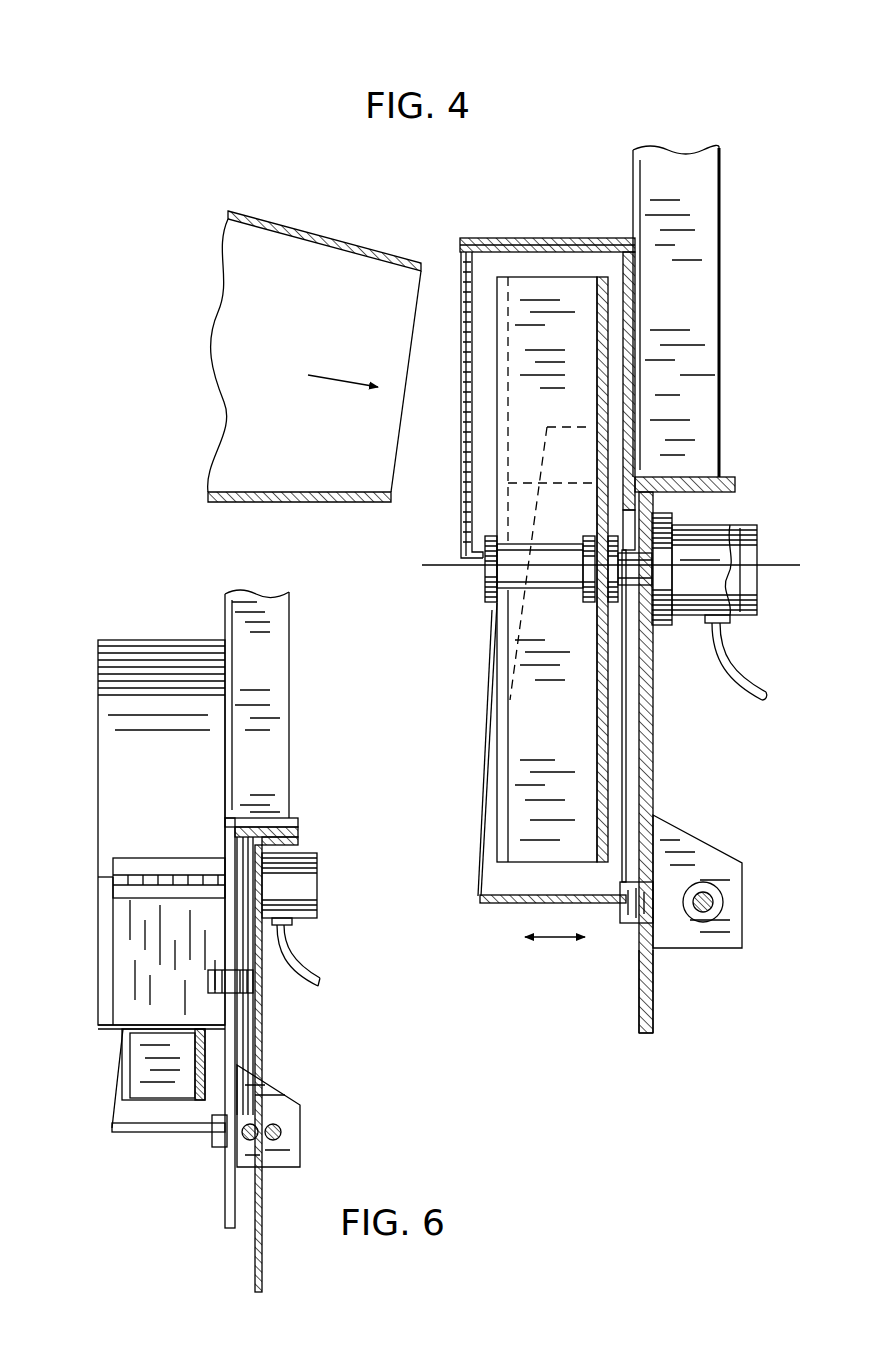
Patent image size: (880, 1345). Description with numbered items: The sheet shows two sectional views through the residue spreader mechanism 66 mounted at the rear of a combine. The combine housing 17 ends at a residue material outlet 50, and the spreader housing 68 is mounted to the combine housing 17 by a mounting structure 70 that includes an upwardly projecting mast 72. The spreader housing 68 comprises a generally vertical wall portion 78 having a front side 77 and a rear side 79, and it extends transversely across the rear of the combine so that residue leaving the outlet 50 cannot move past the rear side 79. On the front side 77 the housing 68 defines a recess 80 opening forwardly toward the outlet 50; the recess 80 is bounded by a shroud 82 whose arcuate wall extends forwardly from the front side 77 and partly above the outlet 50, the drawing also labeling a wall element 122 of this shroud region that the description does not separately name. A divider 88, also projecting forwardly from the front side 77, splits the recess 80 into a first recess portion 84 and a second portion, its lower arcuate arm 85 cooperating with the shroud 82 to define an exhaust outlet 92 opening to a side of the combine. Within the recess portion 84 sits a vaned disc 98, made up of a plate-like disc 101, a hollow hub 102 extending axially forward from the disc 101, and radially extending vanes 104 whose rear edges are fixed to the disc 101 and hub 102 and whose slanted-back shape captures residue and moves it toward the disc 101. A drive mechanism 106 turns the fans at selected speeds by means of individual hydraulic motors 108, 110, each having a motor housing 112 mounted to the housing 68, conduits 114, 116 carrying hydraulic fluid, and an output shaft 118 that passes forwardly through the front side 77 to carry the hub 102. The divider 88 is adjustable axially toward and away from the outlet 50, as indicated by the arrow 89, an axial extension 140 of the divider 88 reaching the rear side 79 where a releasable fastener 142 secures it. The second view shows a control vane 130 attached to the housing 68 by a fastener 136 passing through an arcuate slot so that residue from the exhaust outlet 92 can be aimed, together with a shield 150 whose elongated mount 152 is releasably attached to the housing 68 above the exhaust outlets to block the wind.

In FIG. 4, the housing 17 is at (268, 216).
In FIG. 4, the residue material outlet 50 is at (400, 290).
In FIG. 4, the spreader mechanism 66 is at (626, 132).
In FIG. 6, the spreader mechanism 66 is at (92, 856).
In FIG. 4, the housing 68 is at (662, 786).
In FIG. 6, the housing 68 is at (244, 1210).
In FIG. 4, the mounting structure 70 is at (730, 168).
In FIG. 6, the mounting structure 70 is at (299, 640).
In FIG. 4, the mast 72 is at (695, 232).
In FIG. 6, the mast 72 is at (276, 696).
In FIG. 4, the front side 77 is at (638, 1000).
In FIG. 4, the vertical wall portion 78 is at (655, 1018).
In FIG. 4, the rear side 79 is at (655, 973).
In FIG. 4, the recess 80 is at (558, 270).
In FIG. 4, the shroud 82 is at (508, 238).
In FIG. 6, the shroud 82 is at (118, 755).
In FIG. 4, the first recess portion 84 is at (620, 332).
In FIG. 4, the arcuate arm 85 is at (511, 905).
In FIG. 4, the divider 88 is at (482, 866).
In FIG. 6, the divider 88 is at (114, 1062).
In FIG. 4, the arrow 89 is at (555, 938).
In FIG. 6, the exhaust outlet 92 is at (138, 1114).
In FIG. 4, the vaned disc 98 is at (494, 687).
In FIG. 4, the plate-like disc 101 is at (605, 395).
In FIG. 6, the plate-like disc 101 is at (194, 1090).
In FIG. 4, the hollow hub 102 is at (544, 560).
In FIG. 4, the vane 104 is at (528, 455).
In FIG. 6, the vane 104 is at (148, 1080).
In FIG. 4, the drive mechanism 106 is at (745, 510).
In FIG. 6, the drive mechanism 106 is at (322, 892).
In FIG. 4, the motor 108 is at (700, 597).
In FIG. 4, the motor 110 is at (755, 570).
In FIG. 4, the motor housing 112 is at (713, 547).
In FIG. 4, the conduit 114 is at (734, 667).
In FIG. 4, the conduit 116 is at (746, 700).
In FIG. 4, the output shaft 118 is at (484, 580).
In FIG. 4, the housing wall 122 is at (465, 422).
In FIG. 6, the vane 130 is at (118, 1010).
In FIG. 6, the fastener 136 is at (206, 968).
In FIG. 4, the axial extension 140 is at (722, 870).
In FIG. 4, the releasable fastener 142 is at (725, 955).
In FIG. 6, the shield 150 is at (276, 1072).
In FIG. 6, the elongated mount 152 is at (300, 831).